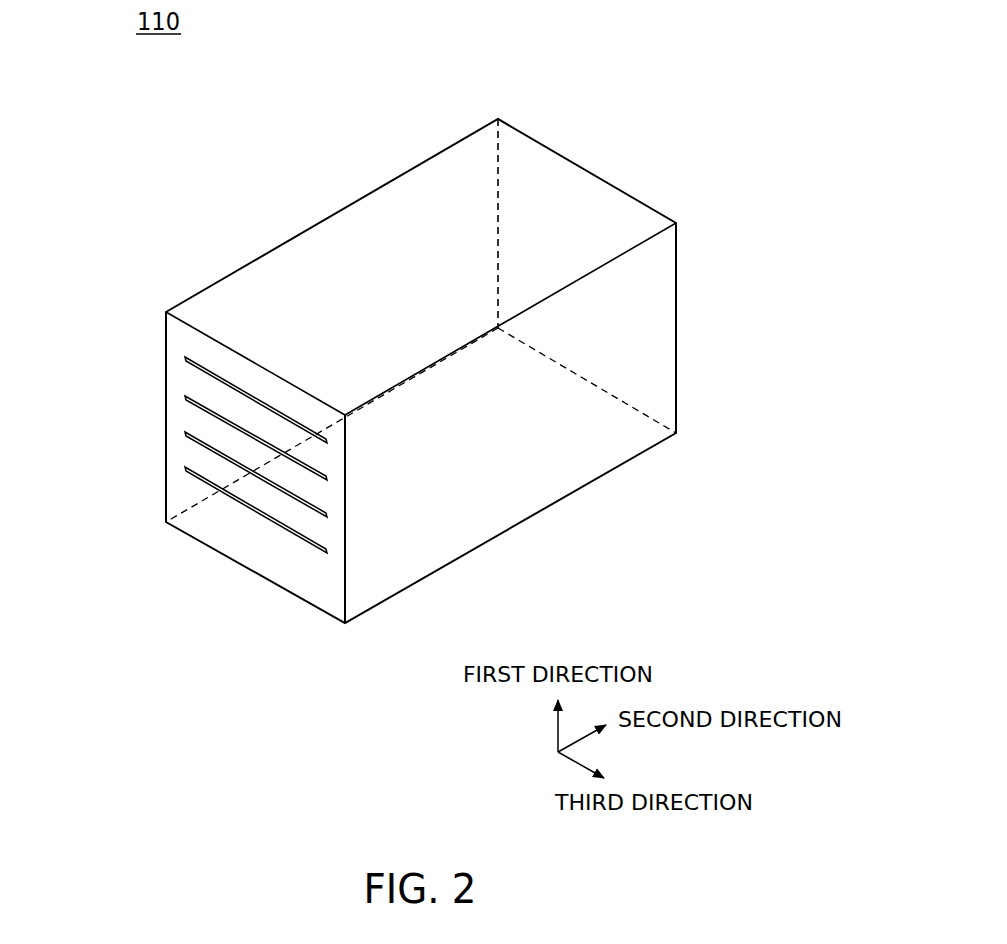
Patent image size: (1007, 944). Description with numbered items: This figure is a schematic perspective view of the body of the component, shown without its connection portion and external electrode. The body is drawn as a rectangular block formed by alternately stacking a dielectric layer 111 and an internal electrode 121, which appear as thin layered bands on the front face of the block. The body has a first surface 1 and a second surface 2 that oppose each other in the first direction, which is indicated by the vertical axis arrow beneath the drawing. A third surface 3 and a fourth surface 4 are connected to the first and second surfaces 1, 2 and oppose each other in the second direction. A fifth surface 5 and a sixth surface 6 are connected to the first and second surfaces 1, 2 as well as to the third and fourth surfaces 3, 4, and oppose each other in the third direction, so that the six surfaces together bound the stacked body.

The first surface 1 is at (483, 518).
The second surface 2 is at (427, 205).
The third surface 3 is at (243, 489).
The fourth surface 4 is at (590, 214).
The fifth surface 5 is at (280, 285).
The sixth surface 6 is at (640, 355).
The dielectric layer 111 is at (195, 423).
The internal electrode 121 is at (203, 372).